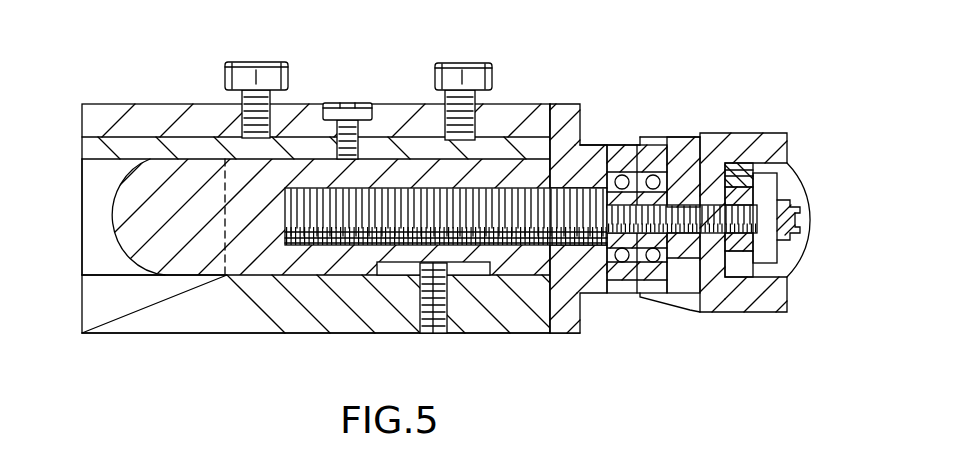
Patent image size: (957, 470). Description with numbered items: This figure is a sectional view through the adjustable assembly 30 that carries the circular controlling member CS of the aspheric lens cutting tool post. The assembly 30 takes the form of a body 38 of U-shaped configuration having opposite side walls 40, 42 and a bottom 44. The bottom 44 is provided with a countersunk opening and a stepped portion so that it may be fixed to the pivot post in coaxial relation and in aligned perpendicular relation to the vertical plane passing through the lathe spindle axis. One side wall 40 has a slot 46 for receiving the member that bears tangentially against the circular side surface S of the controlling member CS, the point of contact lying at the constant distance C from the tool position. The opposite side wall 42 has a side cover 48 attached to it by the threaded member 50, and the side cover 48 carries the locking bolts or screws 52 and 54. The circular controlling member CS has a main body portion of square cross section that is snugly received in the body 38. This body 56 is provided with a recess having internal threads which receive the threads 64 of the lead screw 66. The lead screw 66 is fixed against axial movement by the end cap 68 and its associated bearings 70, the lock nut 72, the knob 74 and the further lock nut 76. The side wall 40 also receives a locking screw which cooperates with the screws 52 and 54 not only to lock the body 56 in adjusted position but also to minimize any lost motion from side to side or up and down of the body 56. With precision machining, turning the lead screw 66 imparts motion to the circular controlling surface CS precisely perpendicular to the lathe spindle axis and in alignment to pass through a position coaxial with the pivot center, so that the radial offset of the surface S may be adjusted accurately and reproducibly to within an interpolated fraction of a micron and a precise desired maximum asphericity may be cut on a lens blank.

The assembly 30 is at (551, 86).
The body 38 is at (496, 337).
The side wall 40 is at (356, 327).
The side wall 42 is at (507, 143).
The bottom 44 is at (84, 202).
The slot 46 is at (210, 325).
The side cover 48 is at (143, 112).
The threaded member 50 is at (348, 103).
The locking screw 52 is at (455, 72).
The locking screw 54 is at (253, 72).
The body 56 is at (316, 267).
The threads 64 is at (578, 106).
The lead screw 66 is at (635, 215).
The end cap 68 is at (581, 133).
The bearings 70 is at (628, 274).
The lock nut 72 is at (687, 190).
The knob 74 is at (757, 140).
The lock nut 76 is at (753, 190).
The constant distance C is at (197, 170).
The circular side surface S is at (113, 228).
The circular controlling surface CS is at (130, 248).